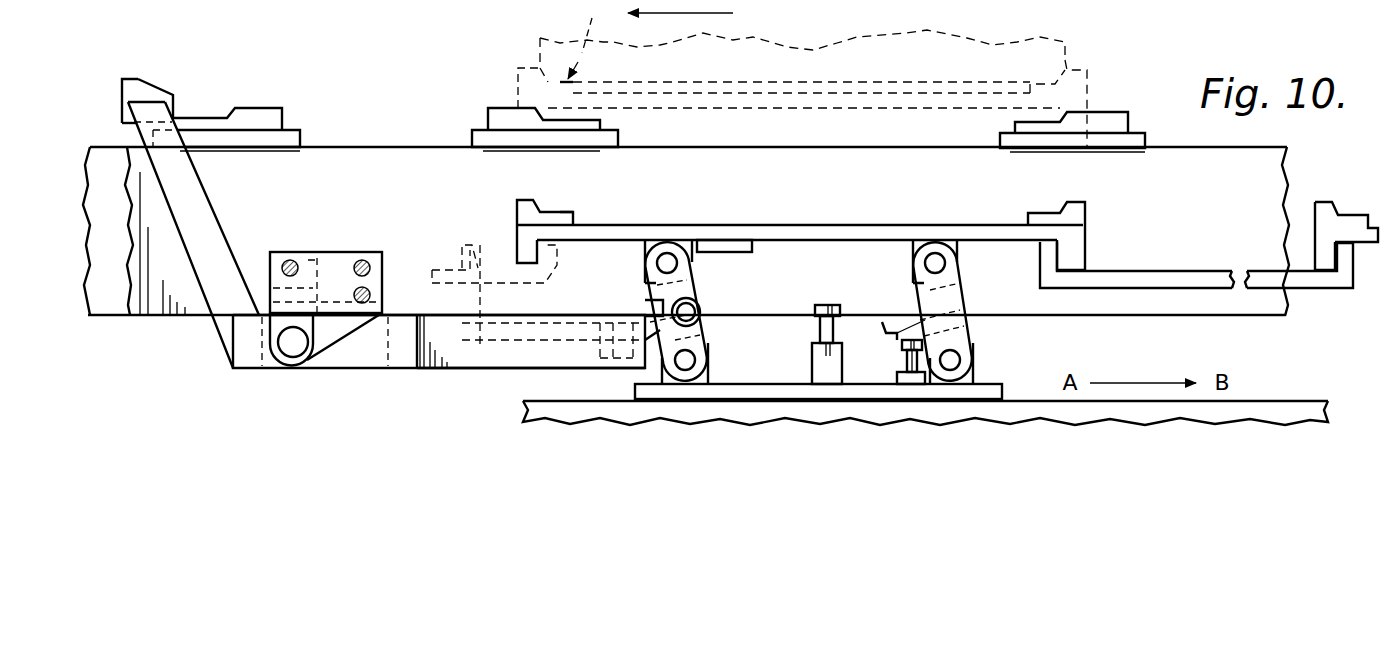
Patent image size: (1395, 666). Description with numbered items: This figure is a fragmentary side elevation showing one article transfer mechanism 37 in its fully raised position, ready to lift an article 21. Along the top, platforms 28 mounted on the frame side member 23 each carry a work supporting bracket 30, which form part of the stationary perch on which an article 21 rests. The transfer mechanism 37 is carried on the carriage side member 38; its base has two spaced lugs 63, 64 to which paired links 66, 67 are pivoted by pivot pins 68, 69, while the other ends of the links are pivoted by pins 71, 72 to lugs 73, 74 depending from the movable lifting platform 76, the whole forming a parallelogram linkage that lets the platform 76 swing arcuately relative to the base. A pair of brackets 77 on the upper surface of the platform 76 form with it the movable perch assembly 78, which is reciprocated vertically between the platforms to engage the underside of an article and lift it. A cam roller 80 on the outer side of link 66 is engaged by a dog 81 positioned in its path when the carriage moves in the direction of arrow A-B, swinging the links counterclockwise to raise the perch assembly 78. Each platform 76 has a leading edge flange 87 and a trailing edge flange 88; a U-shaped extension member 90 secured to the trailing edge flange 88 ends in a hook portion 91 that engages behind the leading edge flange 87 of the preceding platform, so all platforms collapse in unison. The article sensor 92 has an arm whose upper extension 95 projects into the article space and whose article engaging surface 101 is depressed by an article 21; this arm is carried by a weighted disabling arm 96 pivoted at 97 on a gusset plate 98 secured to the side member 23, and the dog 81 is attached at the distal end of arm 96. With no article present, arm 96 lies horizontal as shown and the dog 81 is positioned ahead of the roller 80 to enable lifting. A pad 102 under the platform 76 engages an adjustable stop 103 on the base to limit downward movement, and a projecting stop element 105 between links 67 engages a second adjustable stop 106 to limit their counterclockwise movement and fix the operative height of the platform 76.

The article 21 is at (852, 43).
The frame side member 23 is at (120, 303).
The platform 28 is at (598, 142).
The work supporting bracket 30 is at (289, 111).
The article transfer mechanism 37 is at (925, 151).
The carriage side member 38 is at (1306, 408).
The lug 63 is at (709, 380).
The lug 64 is at (968, 380).
The link 66 is at (705, 287).
The link 67 is at (956, 287).
The pivot pin 68 is at (697, 355).
The pivot pin 69 is at (962, 357).
The pin 71 is at (668, 252).
The pin 72 is at (938, 252).
The lug 73 is at (686, 245).
The lug 74 is at (962, 240).
The movable lifting platform 76 is at (803, 106).
The bracket 77 is at (510, 72).
The movable perch assembly 78 is at (572, 208).
The cam roller 80 is at (702, 312).
The dog 81 is at (600, 351).
The leading edge flange 87 is at (523, 252).
The trailing edge flange 88 is at (1080, 250).
The extension member 90 is at (470, 248).
The hook portion 91 is at (645, 307).
The article sensor 92 is at (222, 211).
The upper extension 95 is at (122, 88).
The disabling arm 96 is at (458, 362).
The pivot 97 is at (293, 345).
The gusset plate 98 is at (342, 252).
The article engaging surface 101 is at (142, 78).
The pad 102 is at (736, 243).
The adjustable stop 103 is at (840, 303).
The projecting stop element 105 is at (884, 323).
The second adjustable stop 106 is at (896, 357).